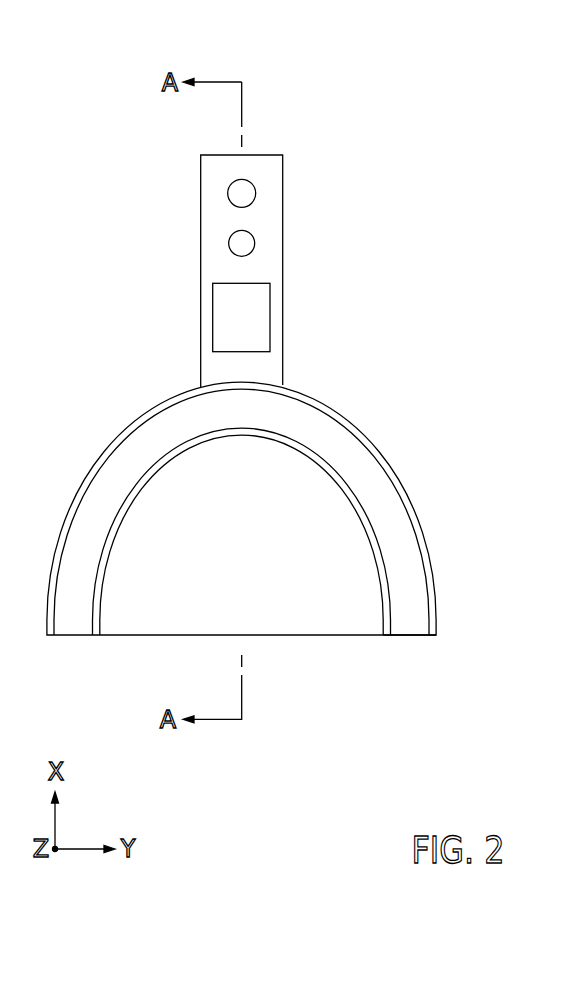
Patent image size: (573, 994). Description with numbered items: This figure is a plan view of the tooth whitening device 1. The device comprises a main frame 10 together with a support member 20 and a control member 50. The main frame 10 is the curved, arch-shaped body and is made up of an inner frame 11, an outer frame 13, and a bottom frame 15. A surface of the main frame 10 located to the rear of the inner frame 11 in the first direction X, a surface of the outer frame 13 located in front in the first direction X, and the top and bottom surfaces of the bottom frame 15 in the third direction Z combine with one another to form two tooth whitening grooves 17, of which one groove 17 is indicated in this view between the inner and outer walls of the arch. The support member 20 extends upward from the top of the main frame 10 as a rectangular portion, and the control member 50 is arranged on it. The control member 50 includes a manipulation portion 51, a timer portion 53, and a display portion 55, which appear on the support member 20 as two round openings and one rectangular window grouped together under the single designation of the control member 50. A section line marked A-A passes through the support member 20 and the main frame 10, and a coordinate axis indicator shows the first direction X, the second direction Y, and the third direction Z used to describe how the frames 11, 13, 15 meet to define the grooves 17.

The tooth whitening device 1 is at (55, 42).
The main frame 10 is at (274, 561).
The inner frame 11 is at (388, 637).
The outer frame 13 is at (432, 637).
The bottom frame 15 is at (410, 637).
The tooth whitening groove 17 is at (407, 586).
The support member 20 is at (297, 233).
The control member 50 is at (303, 265).
The manipulation portion 51 is at (248, 243).
The timer portion 53 is at (248, 193).
The display portion 55 is at (280, 317).